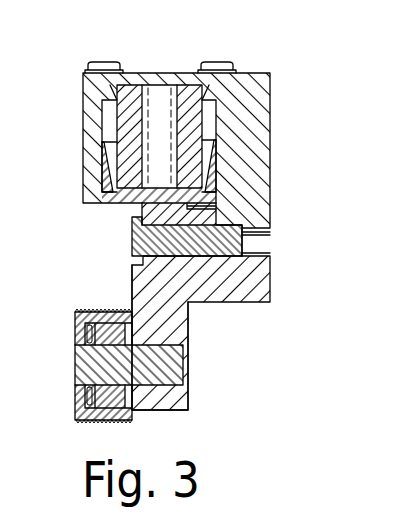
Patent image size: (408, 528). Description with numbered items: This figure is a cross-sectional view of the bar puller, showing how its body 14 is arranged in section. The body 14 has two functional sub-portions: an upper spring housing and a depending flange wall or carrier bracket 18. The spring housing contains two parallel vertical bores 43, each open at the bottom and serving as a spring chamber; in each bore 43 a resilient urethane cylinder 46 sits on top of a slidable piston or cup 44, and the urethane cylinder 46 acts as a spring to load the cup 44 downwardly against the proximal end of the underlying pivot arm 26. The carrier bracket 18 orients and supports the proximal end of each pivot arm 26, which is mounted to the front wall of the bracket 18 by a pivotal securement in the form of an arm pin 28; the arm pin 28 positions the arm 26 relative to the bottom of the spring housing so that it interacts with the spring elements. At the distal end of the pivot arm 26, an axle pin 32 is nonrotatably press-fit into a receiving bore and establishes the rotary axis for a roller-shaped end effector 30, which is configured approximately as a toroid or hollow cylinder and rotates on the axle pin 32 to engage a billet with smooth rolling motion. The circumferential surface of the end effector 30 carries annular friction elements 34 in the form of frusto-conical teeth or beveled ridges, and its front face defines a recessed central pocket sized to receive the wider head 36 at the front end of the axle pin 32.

The body 14 is at (268, 138).
The carrier bracket 18 is at (267, 292).
The pivot arm 26 is at (180, 320).
The arm pin 28 is at (138, 233).
The end effector 30 is at (76, 312).
The axle pin 32 is at (178, 373).
The friction elements 34 is at (104, 422).
The head of axle pin 36 is at (76, 397).
The vertical bore 43 is at (110, 122).
The piston or cup 44 is at (108, 180).
The resilient urethane cylinder 46 is at (189, 88).